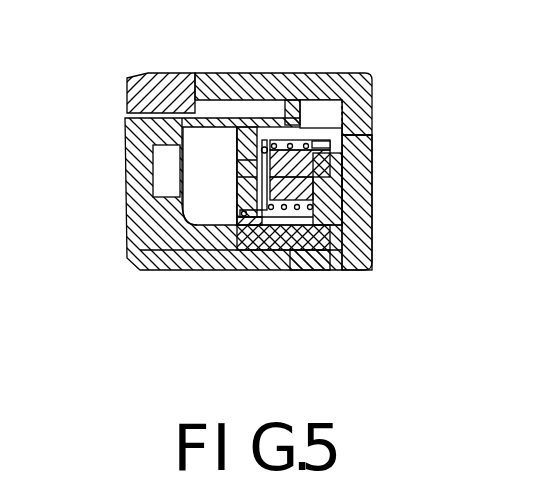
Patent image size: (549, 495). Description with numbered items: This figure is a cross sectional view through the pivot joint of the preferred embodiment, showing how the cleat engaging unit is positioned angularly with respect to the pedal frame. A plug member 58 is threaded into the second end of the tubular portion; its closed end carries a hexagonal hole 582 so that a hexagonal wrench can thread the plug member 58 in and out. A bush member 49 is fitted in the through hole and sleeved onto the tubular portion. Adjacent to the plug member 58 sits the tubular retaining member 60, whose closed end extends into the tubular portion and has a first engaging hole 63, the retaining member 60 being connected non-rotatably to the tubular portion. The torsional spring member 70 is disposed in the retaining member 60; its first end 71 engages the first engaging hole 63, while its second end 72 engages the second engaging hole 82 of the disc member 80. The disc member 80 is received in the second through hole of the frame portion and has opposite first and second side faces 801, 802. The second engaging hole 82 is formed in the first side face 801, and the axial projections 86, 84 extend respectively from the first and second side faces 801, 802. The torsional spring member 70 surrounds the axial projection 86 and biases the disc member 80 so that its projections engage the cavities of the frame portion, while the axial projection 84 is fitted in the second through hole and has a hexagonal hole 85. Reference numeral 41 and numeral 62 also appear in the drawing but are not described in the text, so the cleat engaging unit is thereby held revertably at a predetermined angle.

The cap body 41 is at (164, 95).
The bush member 49 is at (190, 90).
The plug member 58 is at (140, 145).
The hexagonal hole 582 is at (133, 187).
The tubular retaining member 60 is at (293, 252).
The pin 62 is at (243, 138).
The first engaging hole 63 is at (249, 228).
The torsional spring member 70 is at (266, 148).
The first end of torsional spring member 71 is at (222, 243).
The second end of torsional spring member 72 is at (345, 75).
The disc member 80 is at (327, 255).
The first side face 801 is at (302, 258).
The second side face 802 is at (371, 256).
The second engaging hole 82 is at (373, 135).
The axial projection 84 is at (373, 222).
The hexagonal hole 85 is at (373, 188).
The axial projection 86 is at (288, 158).